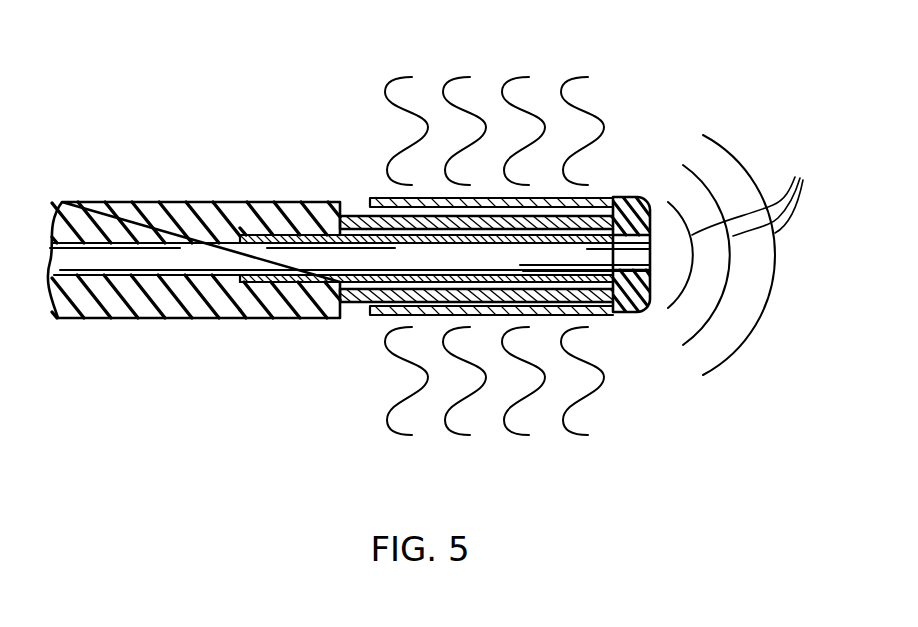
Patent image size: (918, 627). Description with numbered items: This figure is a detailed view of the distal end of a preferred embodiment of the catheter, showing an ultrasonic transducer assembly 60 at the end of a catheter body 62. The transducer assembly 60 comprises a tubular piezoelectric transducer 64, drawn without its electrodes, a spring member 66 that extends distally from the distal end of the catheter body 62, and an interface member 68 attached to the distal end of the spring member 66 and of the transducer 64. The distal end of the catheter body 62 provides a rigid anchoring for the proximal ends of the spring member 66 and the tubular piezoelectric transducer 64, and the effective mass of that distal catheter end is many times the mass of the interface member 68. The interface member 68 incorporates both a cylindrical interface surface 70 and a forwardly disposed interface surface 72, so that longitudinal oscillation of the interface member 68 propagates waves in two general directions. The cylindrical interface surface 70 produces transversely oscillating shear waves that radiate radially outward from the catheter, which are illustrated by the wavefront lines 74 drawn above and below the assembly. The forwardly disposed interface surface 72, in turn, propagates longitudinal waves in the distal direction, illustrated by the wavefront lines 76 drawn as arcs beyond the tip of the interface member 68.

The ultrasonic transducer assembly 60 is at (699, 121).
The catheter body 62 is at (115, 320).
The tubular piezoelectric transducer 64 is at (357, 216).
The spring member 66 is at (275, 283).
The interface member 68 is at (632, 313).
The cylindrical interface surface 70 is at (378, 316).
The forwardly disposed interface surface 72 is at (724, 296).
The wavefront lines 74 is at (502, 93).
The wavefront lines 76 is at (752, 193).